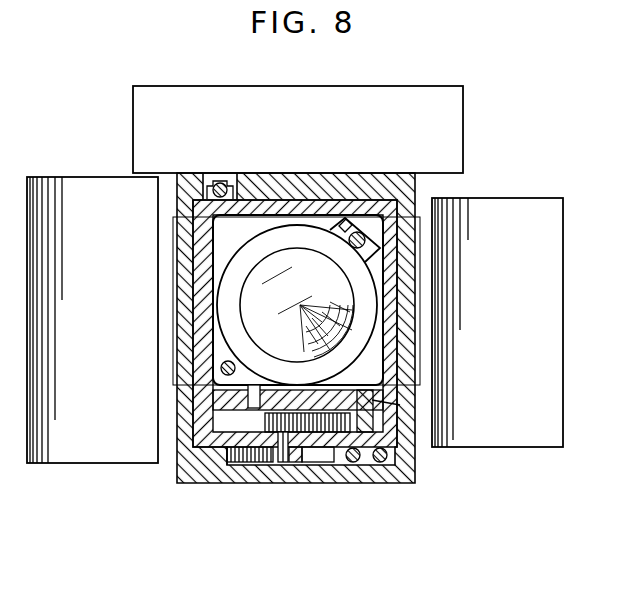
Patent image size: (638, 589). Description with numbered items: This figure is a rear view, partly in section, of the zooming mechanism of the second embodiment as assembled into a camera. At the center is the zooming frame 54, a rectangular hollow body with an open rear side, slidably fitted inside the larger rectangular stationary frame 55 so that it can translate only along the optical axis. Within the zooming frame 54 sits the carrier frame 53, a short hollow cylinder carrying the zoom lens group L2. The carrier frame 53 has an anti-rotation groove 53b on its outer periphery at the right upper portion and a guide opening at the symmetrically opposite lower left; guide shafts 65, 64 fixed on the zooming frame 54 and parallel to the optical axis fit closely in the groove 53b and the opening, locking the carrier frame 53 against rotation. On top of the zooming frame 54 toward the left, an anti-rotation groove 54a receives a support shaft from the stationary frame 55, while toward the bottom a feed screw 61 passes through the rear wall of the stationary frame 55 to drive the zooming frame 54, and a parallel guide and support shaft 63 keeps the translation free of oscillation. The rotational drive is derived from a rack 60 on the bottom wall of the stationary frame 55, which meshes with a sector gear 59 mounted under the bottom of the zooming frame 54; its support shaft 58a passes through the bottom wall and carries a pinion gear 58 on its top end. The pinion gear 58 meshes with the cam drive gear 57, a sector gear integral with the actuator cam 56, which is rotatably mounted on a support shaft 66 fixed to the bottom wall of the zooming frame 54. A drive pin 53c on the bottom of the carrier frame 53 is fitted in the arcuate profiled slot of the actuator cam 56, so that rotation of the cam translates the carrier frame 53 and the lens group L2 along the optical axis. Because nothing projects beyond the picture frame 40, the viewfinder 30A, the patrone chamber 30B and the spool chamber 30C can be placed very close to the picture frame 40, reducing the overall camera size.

The viewfinder 30A is at (148, 92).
The patrone chamber 30B is at (91, 190).
The spool chamber 30C is at (497, 215).
The picture frame 40 is at (173, 244).
The carrier frame 53 is at (254, 254).
The anti-rotation groove 53b is at (348, 226).
The drive pin 53c is at (255, 386).
The zooming frame 54 is at (238, 195).
The anti-rotation groove 54a is at (205, 192).
The stationary frame 55 is at (408, 450).
The actuator cam 56 is at (343, 400).
The cam drive gear 57 is at (317, 450).
The pinion gear 58 is at (265, 422).
The support shaft 58a is at (278, 463).
The sector gear 59 is at (300, 463).
The rack 60 is at (232, 463).
The feed screw 61 is at (383, 463).
The guide and support shaft 63 is at (353, 463).
The guide shaft 64 is at (225, 363).
The guide shaft 65 is at (350, 247).
The support shaft 66 is at (383, 404).
The zoom lens group L2 is at (252, 299).